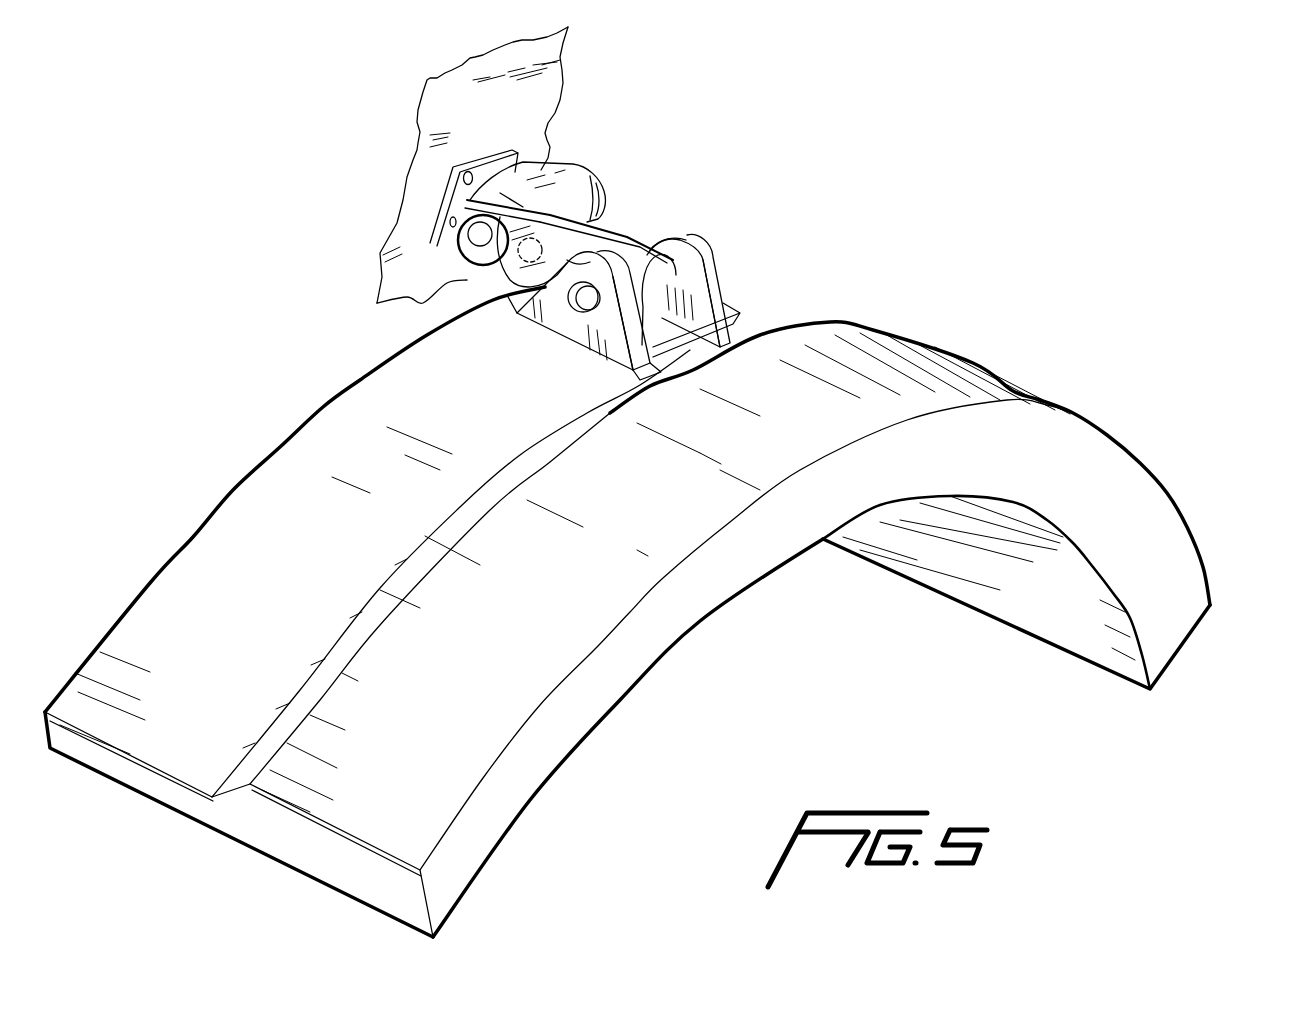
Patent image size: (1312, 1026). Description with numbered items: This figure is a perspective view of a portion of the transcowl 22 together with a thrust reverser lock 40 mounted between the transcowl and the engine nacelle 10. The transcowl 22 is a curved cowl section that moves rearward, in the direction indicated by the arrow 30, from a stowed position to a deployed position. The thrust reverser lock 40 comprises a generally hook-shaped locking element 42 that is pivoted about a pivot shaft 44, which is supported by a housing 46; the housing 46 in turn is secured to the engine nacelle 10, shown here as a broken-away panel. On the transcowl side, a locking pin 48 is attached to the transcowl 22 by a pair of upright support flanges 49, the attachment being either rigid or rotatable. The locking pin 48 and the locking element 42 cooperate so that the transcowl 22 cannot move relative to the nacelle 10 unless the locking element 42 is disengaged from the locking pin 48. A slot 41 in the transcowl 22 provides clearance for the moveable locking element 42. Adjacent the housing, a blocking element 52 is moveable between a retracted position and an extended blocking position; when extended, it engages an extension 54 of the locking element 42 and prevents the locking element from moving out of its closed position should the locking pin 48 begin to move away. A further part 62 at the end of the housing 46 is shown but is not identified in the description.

The engine nacelle 10 is at (412, 146).
The transcowl 22 is at (647, 522).
The arrow 30 is at (1302, 563).
The thrust reverser lock 40 is at (604, 213).
The slot 41 is at (680, 345).
The locking element 42 is at (667, 240).
The pivot shaft 44 is at (548, 243).
The housing 46 is at (555, 160).
The locking pin 48 is at (572, 312).
The support flanges 49 is at (710, 282).
The blocking element 52 is at (475, 247).
The extension 54 is at (476, 222).
The end cap 62 is at (590, 175).